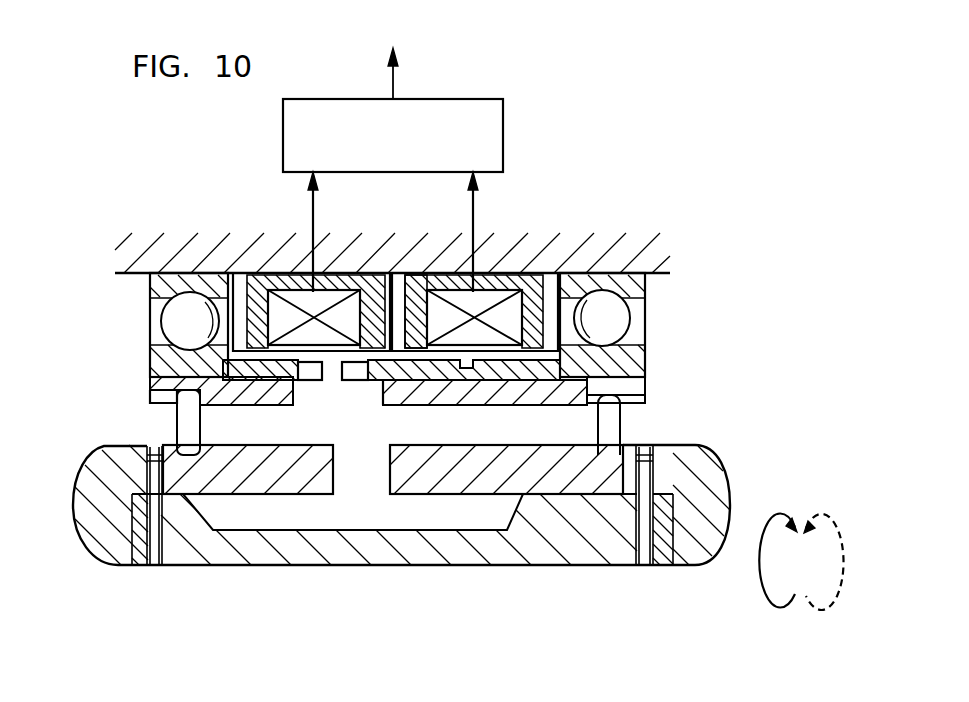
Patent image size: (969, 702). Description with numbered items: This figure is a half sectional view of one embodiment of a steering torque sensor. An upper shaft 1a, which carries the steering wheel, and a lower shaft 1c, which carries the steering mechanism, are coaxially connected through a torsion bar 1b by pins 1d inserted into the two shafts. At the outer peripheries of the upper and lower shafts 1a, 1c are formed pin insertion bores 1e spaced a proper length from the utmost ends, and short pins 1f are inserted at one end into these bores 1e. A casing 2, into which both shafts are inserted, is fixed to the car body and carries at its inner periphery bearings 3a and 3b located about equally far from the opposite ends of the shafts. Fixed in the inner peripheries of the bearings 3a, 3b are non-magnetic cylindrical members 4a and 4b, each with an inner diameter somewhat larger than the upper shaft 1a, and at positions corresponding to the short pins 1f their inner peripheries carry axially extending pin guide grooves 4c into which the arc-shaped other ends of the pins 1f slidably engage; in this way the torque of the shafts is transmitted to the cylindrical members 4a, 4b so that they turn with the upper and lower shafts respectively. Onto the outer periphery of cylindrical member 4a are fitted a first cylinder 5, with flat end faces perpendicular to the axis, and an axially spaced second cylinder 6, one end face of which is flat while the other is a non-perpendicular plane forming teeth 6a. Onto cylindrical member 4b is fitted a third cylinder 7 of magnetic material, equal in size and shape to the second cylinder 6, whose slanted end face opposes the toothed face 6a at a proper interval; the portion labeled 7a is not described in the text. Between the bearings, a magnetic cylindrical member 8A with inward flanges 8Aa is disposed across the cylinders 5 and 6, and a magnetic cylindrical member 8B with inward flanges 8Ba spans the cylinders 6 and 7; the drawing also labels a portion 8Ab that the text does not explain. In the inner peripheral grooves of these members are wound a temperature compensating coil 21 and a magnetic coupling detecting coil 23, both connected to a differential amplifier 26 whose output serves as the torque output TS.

The upper shaft 1a is at (695, 553).
The torsion bar 1b is at (377, 557).
The lower shaft 1c is at (78, 467).
The pins 1d is at (150, 555).
The pin insertion bores 1e is at (163, 442).
The short pins 1f is at (174, 422).
The casing 2 is at (617, 247).
The bearing 3a is at (647, 311).
The bearing 3b is at (150, 333).
The cylindrical member 4a is at (450, 395).
The cylindrical member 4b is at (278, 393).
The pin guide grooves 4c is at (210, 400).
The first cylinder 5 is at (502, 383).
The second cylinder 6 is at (380, 383).
The teeth 6a is at (355, 383).
The third cylinder 7 is at (261, 385).
The yoke projection 7a is at (305, 382).
The cylindrical member 8A is at (510, 273).
The inward flanges 8Aa is at (543, 273).
The coil bobbin wall 8Ab is at (423, 273).
The cylindrical member 8B is at (295, 292).
The inward flanges 8Ba is at (265, 268).
The temperature compensating coil 21 is at (490, 273).
The magnetic coupling detecting coil 23 is at (343, 310).
The differential amplifier 26 is at (466, 98).
The torque output TS is at (392, 57).